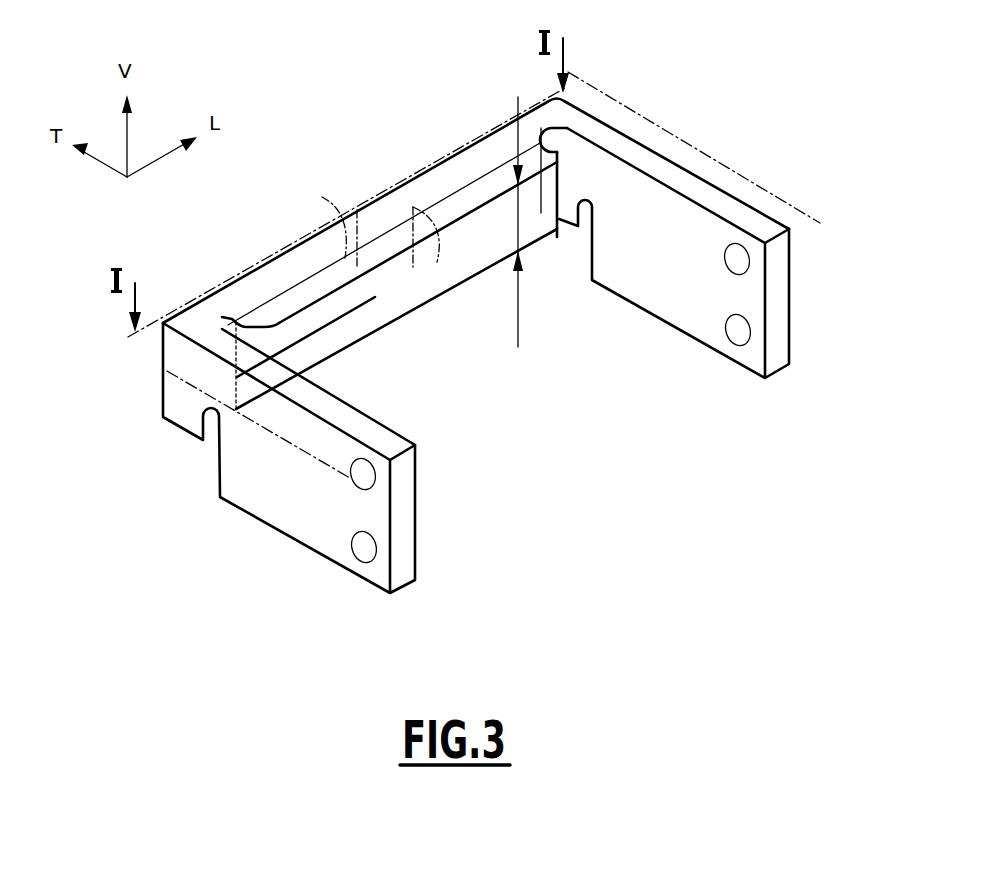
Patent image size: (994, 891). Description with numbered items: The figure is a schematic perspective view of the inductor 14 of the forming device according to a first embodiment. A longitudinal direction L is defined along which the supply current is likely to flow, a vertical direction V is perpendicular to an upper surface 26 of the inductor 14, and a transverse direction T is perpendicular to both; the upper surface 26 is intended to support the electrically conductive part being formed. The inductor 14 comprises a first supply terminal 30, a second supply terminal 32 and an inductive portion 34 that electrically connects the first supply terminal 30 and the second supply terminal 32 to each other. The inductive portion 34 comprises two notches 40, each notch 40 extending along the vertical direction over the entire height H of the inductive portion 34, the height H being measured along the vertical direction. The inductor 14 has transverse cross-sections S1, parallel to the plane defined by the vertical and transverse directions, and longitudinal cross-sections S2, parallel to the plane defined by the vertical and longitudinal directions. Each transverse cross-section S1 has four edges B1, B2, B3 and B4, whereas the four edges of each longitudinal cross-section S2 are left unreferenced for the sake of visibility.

The inductor 14 is at (377, 128).
The upper surface 26 is at (452, 172).
The first supply terminal 30 is at (278, 495).
The second supply terminal 32 is at (685, 298).
The inductive portion 34 is at (413, 204).
The notch 40 is at (247, 332).
The height H is at (518, 229).
The edge B1 is at (444, 284).
The edge B2 is at (342, 200).
The edge B3 is at (322, 198).
The edge B4 is at (393, 312).
The transverse cross-section S1 is at (330, 262).
The longitudinal cross-section S2 is at (377, 328).